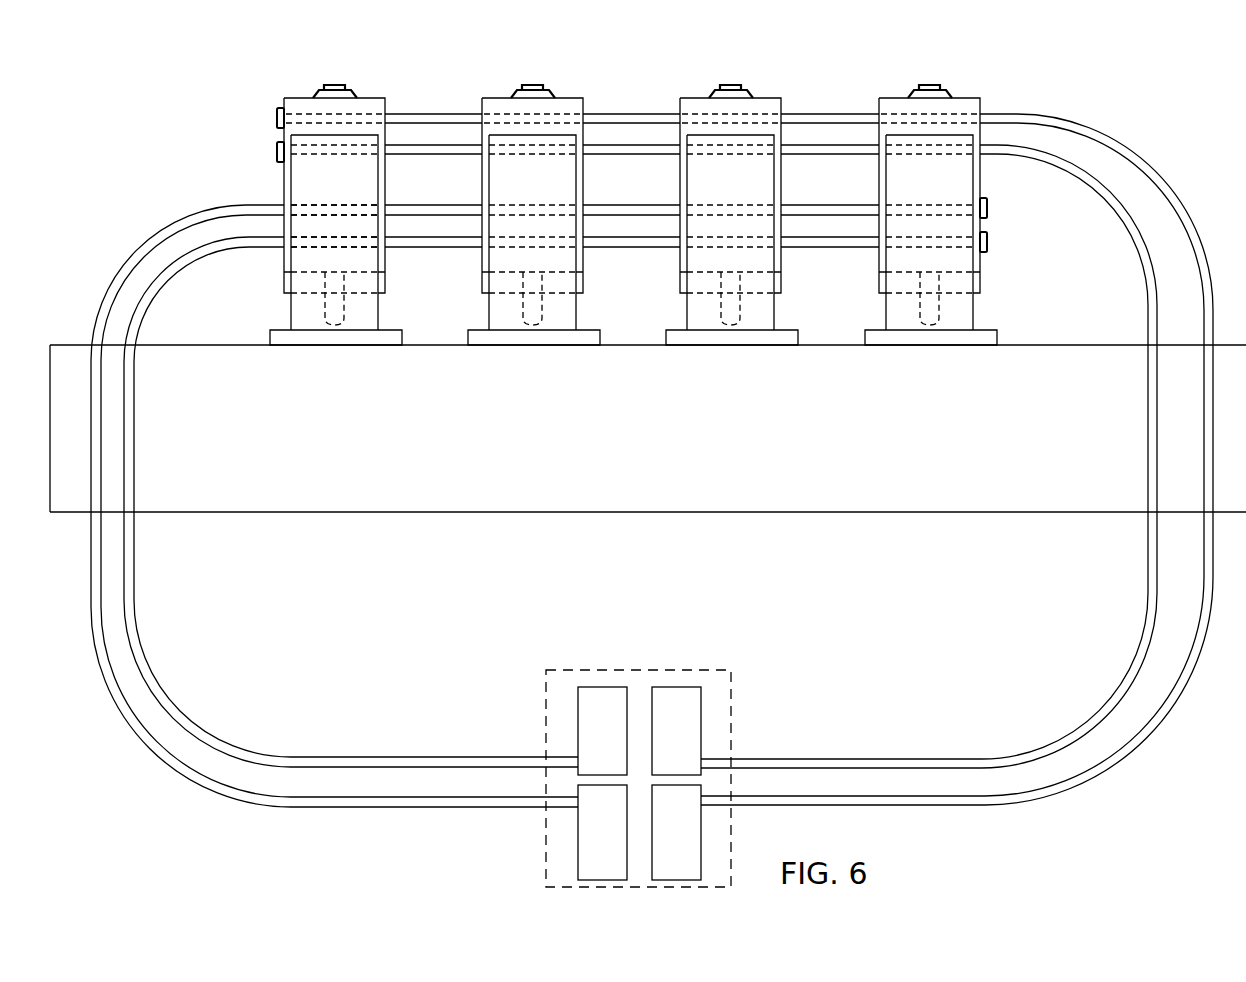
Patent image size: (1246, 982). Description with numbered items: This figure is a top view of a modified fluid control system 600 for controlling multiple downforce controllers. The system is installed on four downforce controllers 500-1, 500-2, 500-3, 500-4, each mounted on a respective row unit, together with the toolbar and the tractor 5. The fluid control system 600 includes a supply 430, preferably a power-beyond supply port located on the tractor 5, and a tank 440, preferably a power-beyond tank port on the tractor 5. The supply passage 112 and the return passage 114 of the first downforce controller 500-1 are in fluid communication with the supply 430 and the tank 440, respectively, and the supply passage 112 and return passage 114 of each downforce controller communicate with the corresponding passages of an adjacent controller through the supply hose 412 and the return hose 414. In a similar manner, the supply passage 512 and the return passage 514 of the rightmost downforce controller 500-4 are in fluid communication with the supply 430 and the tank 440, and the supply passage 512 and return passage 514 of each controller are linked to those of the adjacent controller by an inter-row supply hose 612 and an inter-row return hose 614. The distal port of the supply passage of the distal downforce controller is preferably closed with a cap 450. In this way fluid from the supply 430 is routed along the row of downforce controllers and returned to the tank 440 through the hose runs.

The first downforce controller 500-1 is at (186, 122).
The downforce controller 500-2 is at (499, 82).
The downforce controller 500-3 is at (666, 101).
The rightmost downforce controller 500-4 is at (866, 98).
The supply passage 112 is at (310, 112).
The return passage 114 is at (307, 155).
The supply passage 512 is at (340, 198).
The return passage 514 is at (308, 253).
The return hose 414 is at (474, 145).
The supply hose 412 is at (447, 114).
The inter-row supply hose 612 is at (465, 217).
The inter-row return hose 614 is at (393, 249).
The cap 450 is at (988, 244).
The fluid control system 600 is at (1167, 117).
The tractor 5 is at (731, 688).
The supply 430 is at (661, 741).
The tank 440 is at (587, 741).